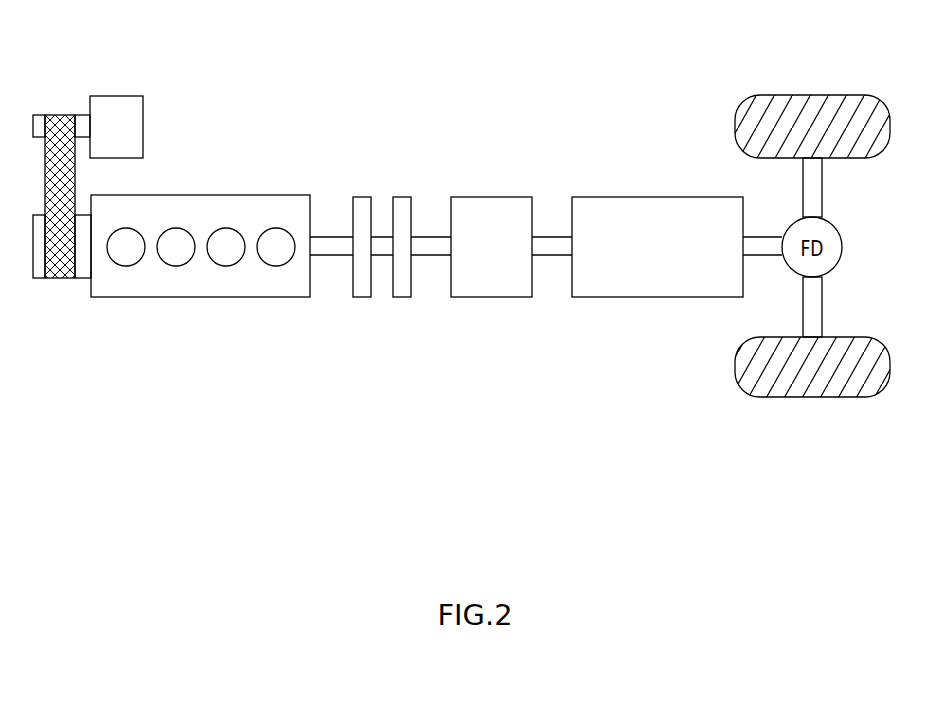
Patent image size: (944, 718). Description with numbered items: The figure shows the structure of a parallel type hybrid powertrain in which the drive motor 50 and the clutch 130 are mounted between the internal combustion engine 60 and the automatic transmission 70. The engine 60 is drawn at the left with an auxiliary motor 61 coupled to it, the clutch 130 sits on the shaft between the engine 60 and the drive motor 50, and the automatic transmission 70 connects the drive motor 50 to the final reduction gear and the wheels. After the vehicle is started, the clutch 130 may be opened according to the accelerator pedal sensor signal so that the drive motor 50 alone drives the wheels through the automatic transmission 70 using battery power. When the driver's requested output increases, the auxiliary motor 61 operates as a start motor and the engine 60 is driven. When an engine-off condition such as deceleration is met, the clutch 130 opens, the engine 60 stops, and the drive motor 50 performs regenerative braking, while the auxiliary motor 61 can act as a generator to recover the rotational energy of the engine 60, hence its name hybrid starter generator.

The drive motor 50 is at (489, 197).
The internal combustion engine 60 is at (198, 195).
The auxiliary motor 61 is at (114, 96).
The automatic transmission 70 is at (657, 197).
The clutch 130 is at (401, 197).